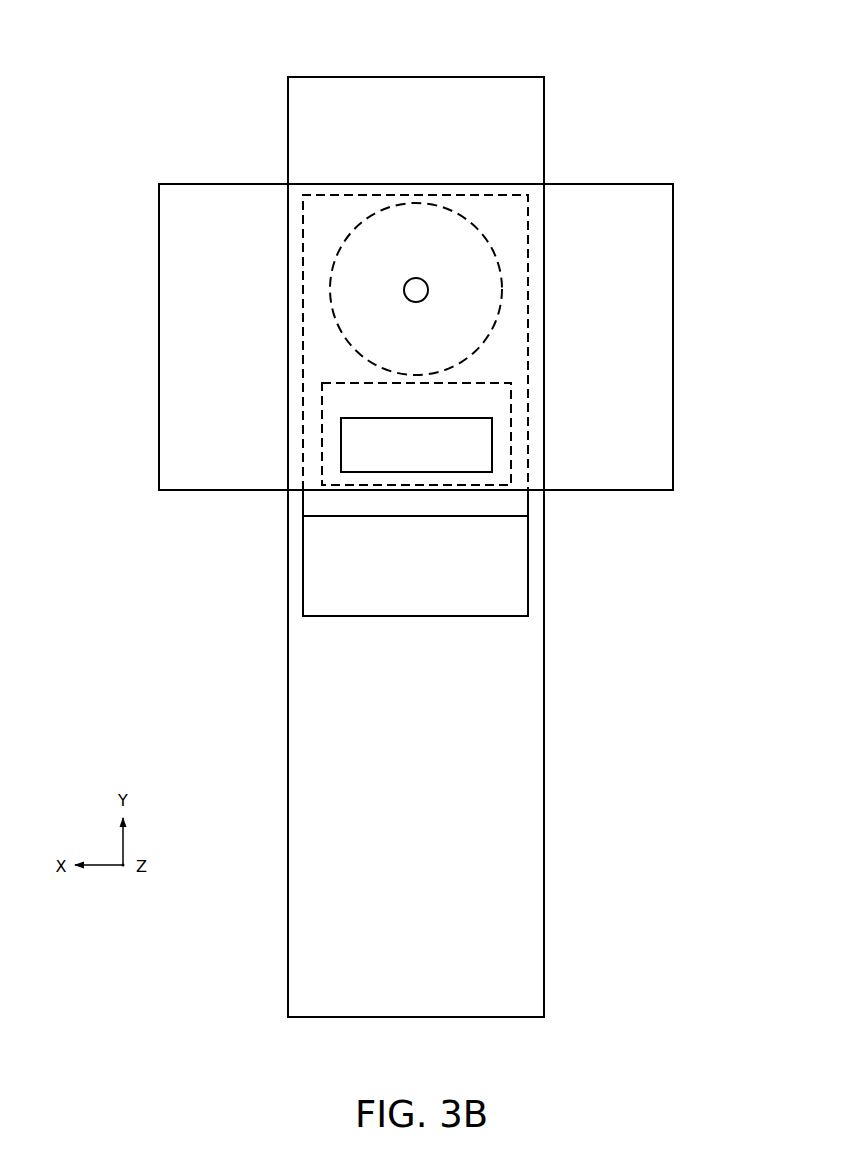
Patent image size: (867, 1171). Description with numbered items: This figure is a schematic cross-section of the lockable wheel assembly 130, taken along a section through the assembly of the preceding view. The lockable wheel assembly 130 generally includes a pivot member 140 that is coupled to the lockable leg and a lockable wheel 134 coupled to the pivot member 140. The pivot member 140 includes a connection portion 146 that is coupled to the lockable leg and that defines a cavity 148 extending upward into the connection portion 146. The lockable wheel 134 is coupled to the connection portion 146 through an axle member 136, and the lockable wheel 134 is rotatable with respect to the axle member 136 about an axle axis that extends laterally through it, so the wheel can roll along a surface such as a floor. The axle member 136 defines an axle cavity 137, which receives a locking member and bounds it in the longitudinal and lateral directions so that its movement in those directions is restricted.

The lockable wheel assembly 130 is at (612, 90).
The lockable wheel 134 is at (525, 829).
The axle member 136 is at (416, 277).
The axle cavity 137 is at (336, 404).
The pivot member 140 is at (699, 286).
The connection portion 146 is at (168, 274).
The cavity 148 is at (492, 447).